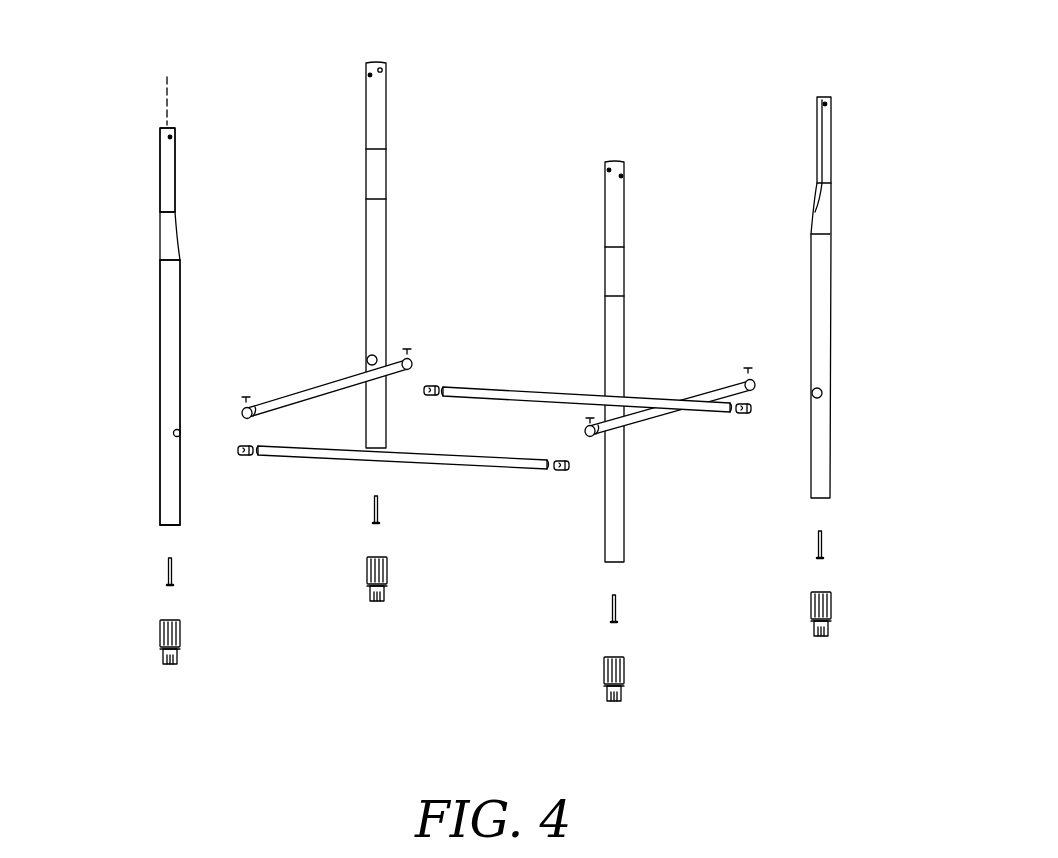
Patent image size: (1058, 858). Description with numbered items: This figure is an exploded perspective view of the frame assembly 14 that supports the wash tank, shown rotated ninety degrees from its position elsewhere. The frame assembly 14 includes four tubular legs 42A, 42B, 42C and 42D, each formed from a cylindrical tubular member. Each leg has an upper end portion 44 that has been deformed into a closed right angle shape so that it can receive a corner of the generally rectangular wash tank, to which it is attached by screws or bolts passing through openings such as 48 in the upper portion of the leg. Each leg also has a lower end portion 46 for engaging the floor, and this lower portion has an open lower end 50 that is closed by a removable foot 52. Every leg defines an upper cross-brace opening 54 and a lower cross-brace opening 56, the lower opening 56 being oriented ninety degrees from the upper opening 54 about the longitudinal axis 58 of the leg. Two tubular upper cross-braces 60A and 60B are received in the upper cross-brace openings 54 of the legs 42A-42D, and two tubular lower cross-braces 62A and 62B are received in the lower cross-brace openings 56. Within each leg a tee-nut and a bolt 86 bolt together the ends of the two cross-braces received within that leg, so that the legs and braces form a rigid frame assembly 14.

The frame assembly 14 is at (690, 68).
The tubular leg 42A is at (162, 335).
The tubular leg 42B is at (622, 500).
The tubular leg 42C is at (812, 467).
The tubular leg 42D is at (370, 288).
The upper end portion 44 is at (162, 160).
The lower end portion 46 is at (160, 510).
The opening 48 is at (170, 138).
The open lower end 50 is at (168, 527).
The removable foot 52 is at (182, 630).
The upper cross-brace opening 54 is at (366, 360).
The lower cross-brace opening 56 is at (182, 433).
The longitudinal axis 58 is at (175, 90).
The upper cross-brace 60A is at (302, 392).
The upper cross-brace 60B is at (727, 386).
The lower cross-brace 62A is at (440, 470).
The lower cross-brace 62B is at (485, 388).
The bolt 86 is at (612, 608).